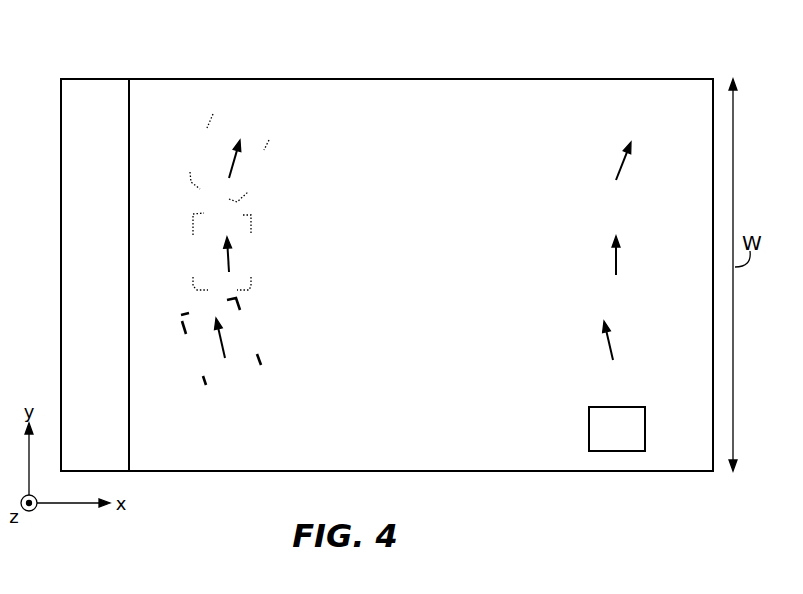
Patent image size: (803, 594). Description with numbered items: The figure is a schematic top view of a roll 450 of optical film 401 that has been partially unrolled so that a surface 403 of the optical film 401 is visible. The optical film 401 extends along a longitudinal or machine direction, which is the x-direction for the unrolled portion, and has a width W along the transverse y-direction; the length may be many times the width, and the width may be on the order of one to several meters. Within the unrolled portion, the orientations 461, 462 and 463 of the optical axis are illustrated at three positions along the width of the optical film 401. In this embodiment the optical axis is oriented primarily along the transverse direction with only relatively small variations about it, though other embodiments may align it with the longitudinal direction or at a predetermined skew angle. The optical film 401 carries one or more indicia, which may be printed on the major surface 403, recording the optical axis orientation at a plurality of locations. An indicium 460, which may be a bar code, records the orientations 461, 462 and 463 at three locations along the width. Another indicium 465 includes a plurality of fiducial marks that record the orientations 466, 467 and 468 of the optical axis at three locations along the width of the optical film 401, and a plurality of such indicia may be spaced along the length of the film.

The optical film 401 is at (456, 137).
The surface of the optical film 403 is at (557, 114).
The roll 450 is at (92, 98).
The indicium 460 is at (612, 428).
The orientation of the optical axis 461 is at (622, 162).
The orientation of the optical axis 462 is at (613, 253).
The orientation of the optical axis 463 is at (605, 342).
The indicium 465 is at (221, 113).
The orientation of the optical axis 466 is at (236, 163).
The orientation of the optical axis 467 is at (228, 257).
The orientation of the optical axis 468 is at (222, 338).